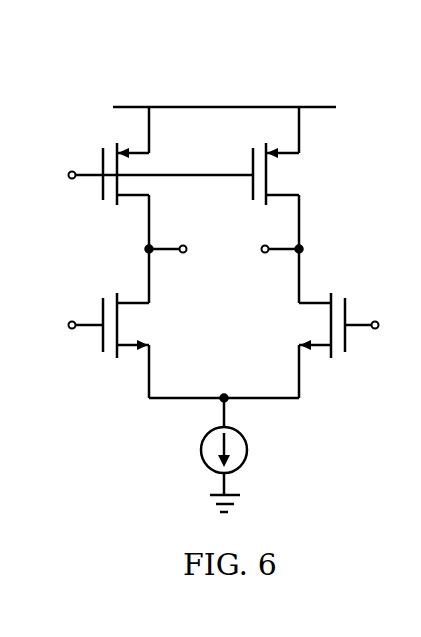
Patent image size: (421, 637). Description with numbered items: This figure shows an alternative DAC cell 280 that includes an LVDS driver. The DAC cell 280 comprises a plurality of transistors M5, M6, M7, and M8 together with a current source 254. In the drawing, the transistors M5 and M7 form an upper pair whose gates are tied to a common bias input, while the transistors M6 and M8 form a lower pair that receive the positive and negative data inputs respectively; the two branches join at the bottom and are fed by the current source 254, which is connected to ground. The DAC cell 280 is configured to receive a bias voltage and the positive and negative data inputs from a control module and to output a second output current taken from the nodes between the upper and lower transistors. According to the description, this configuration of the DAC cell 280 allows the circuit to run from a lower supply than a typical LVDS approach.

The DAC cell 280 is at (223, 266).
The current source 254 is at (247, 450).
The transistor M5 is at (127, 174).
The transistor M6 is at (127, 325).
The transistor M7 is at (278, 174).
The transistor M8 is at (320, 325).